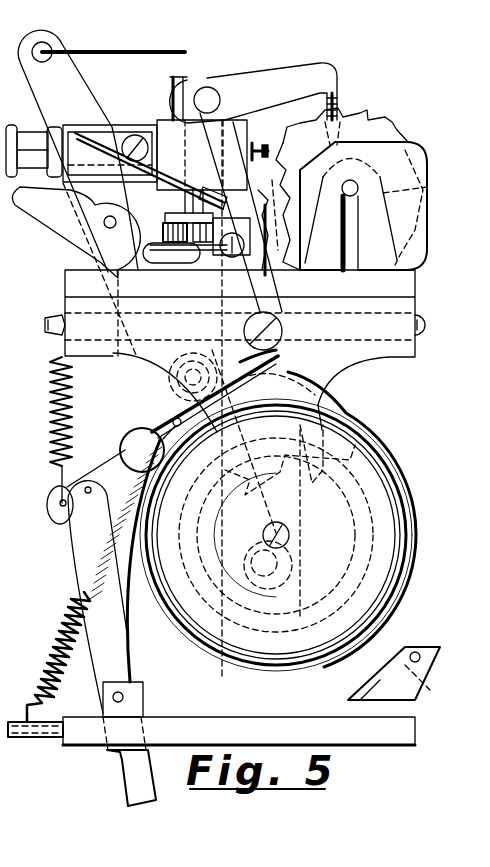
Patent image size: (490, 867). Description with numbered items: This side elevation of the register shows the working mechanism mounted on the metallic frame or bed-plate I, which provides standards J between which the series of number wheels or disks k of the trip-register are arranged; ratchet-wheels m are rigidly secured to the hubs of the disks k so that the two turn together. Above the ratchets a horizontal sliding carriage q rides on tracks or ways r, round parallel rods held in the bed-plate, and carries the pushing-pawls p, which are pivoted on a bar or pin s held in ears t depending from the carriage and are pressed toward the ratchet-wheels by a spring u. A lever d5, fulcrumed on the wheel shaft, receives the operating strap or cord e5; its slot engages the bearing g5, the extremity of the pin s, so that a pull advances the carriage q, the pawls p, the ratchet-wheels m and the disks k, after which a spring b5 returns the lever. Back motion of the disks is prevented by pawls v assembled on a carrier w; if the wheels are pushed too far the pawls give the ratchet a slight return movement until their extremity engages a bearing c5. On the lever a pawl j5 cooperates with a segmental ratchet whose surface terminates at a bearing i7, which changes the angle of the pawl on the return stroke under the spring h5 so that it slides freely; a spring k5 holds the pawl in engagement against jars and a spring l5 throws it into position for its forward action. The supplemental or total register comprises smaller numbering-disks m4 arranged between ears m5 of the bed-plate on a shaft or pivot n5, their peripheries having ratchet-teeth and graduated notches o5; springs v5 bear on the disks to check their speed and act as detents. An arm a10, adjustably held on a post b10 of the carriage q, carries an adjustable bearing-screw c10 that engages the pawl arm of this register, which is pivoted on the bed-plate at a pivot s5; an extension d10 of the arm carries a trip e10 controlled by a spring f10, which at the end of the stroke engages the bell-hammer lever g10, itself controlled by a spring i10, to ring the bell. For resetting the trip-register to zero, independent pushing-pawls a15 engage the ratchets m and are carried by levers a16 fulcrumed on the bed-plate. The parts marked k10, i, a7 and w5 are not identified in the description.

The frame or bed-plate I is at (239, 731).
The number wheels or disks k is at (418, 560).
The ratchet-wheels m is at (398, 582).
The wheel hub k10 is at (290, 495).
The shaft i is at (267, 572).
The bar or pin s is at (200, 373).
The spring u is at (242, 377).
The pushing-pawls p is at (322, 410).
The sliding carriage q is at (143, 353).
The spring i10 is at (268, 360).
The standards J is at (303, 363).
The tracks or ways r is at (428, 326).
The ears t is at (244, 330).
The pawls v is at (428, 648).
The carrier w is at (381, 690).
The spring b5 is at (55, 392).
The levers a16 is at (78, 545).
The lever guide a7 is at (112, 697).
The pushing-pawls a15 is at (112, 476).
The spring k5 is at (56, 643).
The lever d5 is at (78, 151).
The operating strap or cord e5 is at (113, 42).
The extension d10 is at (81, 153).
The pawl or trip e10 is at (151, 171).
The arm a10 is at (202, 155).
The spring f10 is at (194, 157).
The standard or post b10 is at (170, 97).
The spring h5 is at (250, 93).
The numbering-disks m4 is at (345, 126).
The graduated notches o5 is at (330, 148).
The ears m5 is at (428, 185).
The shaft or pivot n5 is at (356, 186).
The bearing i7 is at (303, 197).
The bearing g5 is at (255, 168).
The springs v5 is at (263, 188).
The spring l5 is at (128, 199).
The pawl j5 is at (112, 234).
The adjustable bearing-screw c10 is at (11, 223).
The column w5 is at (185, 226).
The bearing c5 is at (213, 265).
The pivot s5 is at (240, 262).
The bell-hammer lever g10 is at (272, 278).